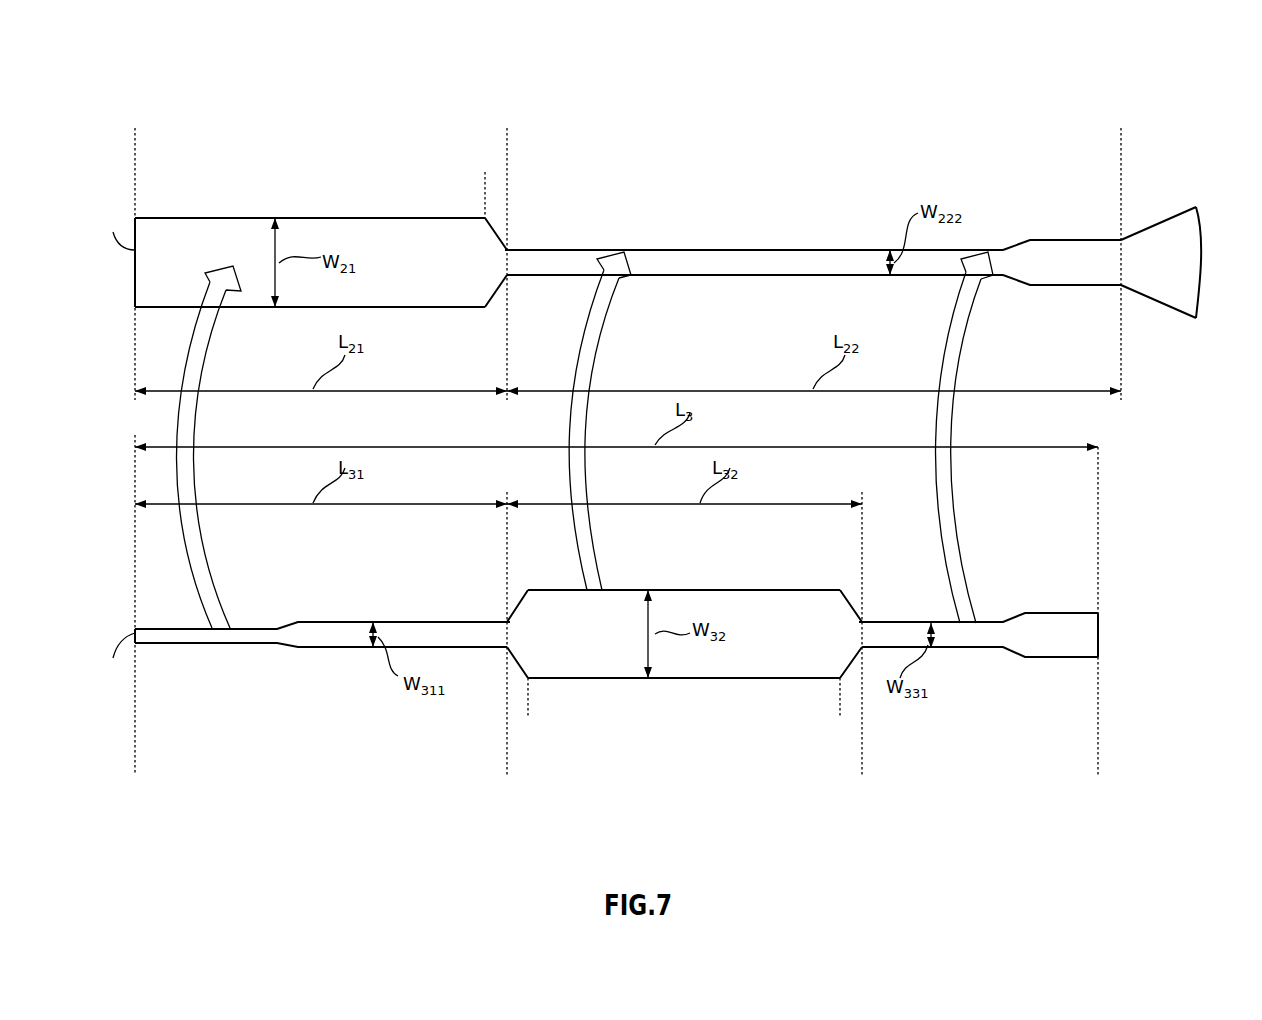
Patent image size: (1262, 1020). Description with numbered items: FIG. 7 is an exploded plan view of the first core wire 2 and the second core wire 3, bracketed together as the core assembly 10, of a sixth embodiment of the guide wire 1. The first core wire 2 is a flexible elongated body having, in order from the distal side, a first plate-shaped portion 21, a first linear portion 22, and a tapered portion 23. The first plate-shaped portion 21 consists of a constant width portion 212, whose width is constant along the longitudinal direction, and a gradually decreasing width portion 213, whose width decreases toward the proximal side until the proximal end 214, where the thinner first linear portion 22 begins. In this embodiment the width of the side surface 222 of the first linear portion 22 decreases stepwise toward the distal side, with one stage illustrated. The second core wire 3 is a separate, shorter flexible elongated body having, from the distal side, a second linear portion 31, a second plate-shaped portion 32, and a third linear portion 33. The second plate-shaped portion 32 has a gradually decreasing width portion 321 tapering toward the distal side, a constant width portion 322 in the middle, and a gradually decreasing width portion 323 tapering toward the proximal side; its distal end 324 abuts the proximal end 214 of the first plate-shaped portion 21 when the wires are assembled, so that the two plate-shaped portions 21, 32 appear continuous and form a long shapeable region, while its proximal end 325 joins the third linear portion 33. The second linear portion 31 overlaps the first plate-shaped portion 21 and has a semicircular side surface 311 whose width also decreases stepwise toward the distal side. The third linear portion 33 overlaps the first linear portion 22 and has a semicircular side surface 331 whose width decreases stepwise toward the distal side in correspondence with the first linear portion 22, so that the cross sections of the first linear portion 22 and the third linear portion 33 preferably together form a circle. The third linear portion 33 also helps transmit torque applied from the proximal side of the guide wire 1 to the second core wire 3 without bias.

The guide wire 1 is at (1049, 57).
The first core wire 2 is at (1039, 291).
The second core wire 3 is at (1039, 609).
The waveguide coupler 10 is at (1175, 375).
The first plate-shaped portion 21 is at (135, 136).
The first linear portion 22 is at (1121, 136).
The tapered portion 23 is at (1121, 136).
The constant width portion 212 is at (135, 180).
The gradually decreasing width portion 213 is at (507, 180).
The proximal end 214 is at (510, 247).
The side surface 222 is at (722, 262).
The second linear portion 31 is at (507, 767).
The second plate-shaped portion 32 is at (507, 767).
The third linear portion 33 is at (862, 767).
The side surface 311 is at (308, 637).
The gradually decreasing width portion 321 is at (507, 714).
The constant width portion 322 is at (528, 714).
The gradually decreasing width portion 323 is at (862, 714).
The distal end 324 is at (508, 620).
The second junction 325 is at (862, 620).
The side surface 331 is at (965, 640).